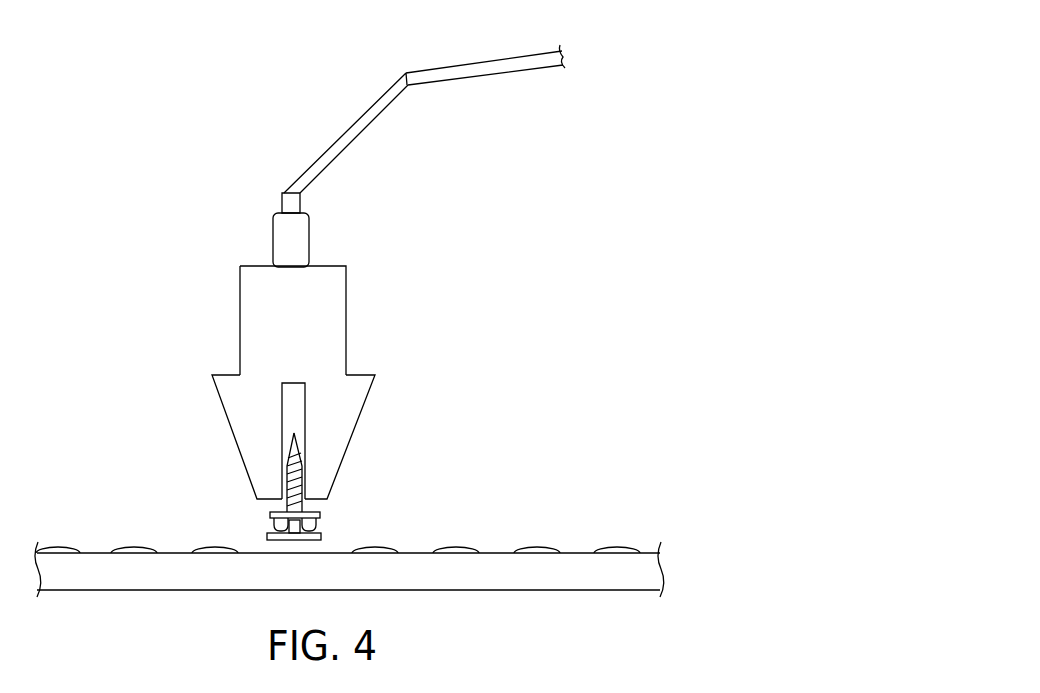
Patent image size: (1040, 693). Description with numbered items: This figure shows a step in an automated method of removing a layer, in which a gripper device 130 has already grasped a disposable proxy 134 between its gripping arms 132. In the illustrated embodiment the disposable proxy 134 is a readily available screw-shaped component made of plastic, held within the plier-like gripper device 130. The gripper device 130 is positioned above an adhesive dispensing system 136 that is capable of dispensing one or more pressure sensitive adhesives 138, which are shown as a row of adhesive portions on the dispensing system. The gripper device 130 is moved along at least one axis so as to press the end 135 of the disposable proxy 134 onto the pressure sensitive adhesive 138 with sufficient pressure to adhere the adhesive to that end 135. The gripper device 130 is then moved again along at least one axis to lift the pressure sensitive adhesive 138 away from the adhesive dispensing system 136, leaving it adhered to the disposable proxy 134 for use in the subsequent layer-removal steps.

The gripper device 130 is at (347, 318).
The gripping arms 132 is at (353, 435).
The disposable proxy 134 is at (268, 513).
The end of the disposable proxy 135 is at (323, 523).
The adhesive dispensing system 136 is at (655, 516).
The pressure sensitive adhesive 138 is at (267, 537).